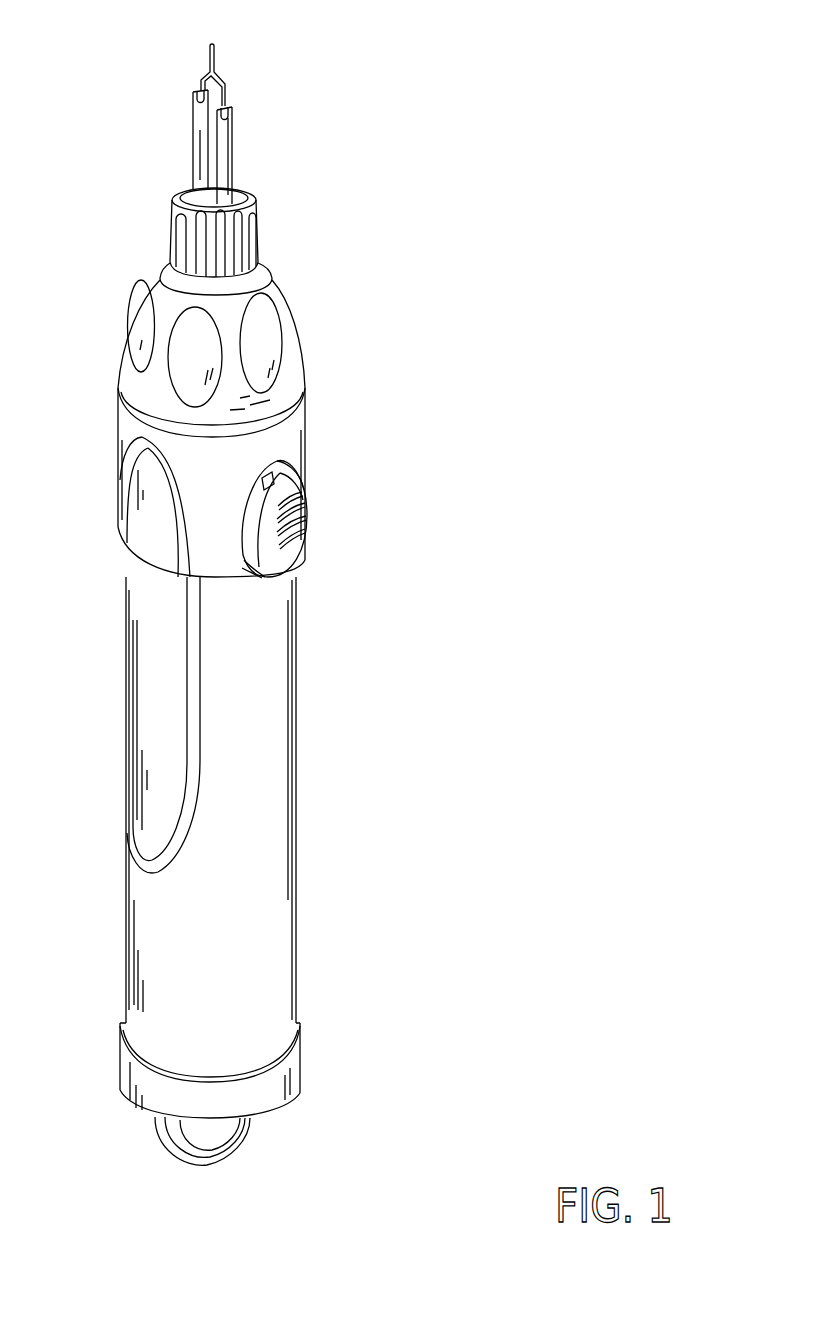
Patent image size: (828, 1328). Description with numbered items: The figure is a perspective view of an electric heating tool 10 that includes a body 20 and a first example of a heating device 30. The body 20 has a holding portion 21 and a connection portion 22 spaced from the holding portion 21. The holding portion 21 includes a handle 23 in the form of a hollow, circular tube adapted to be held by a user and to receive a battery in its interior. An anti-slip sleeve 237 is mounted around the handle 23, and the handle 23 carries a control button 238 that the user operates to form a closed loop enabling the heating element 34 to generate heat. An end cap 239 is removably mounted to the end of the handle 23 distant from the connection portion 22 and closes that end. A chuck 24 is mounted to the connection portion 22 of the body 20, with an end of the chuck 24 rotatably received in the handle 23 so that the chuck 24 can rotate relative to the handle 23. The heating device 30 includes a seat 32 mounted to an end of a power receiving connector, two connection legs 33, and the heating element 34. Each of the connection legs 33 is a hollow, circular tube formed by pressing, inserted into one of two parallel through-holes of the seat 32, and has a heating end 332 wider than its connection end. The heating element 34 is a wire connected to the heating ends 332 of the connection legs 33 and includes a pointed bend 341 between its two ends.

The electric heating tool 10 is at (437, 236).
The body 20 is at (415, 517).
The holding portion 21 is at (343, 1037).
The connection portion 22 is at (323, 403).
The handle 23 is at (287, 694).
The chuck 24 is at (160, 327).
The anti-slip sleeve 237 is at (283, 443).
The control button 238 is at (291, 548).
The end cap 239 is at (228, 1133).
The heating device 30 is at (262, 224).
The seat 32 is at (180, 240).
The connection legs 33 is at (225, 185).
The heating end 332 is at (197, 100).
The heating element 34 is at (233, 95).
The pointed bend 341 is at (216, 48).